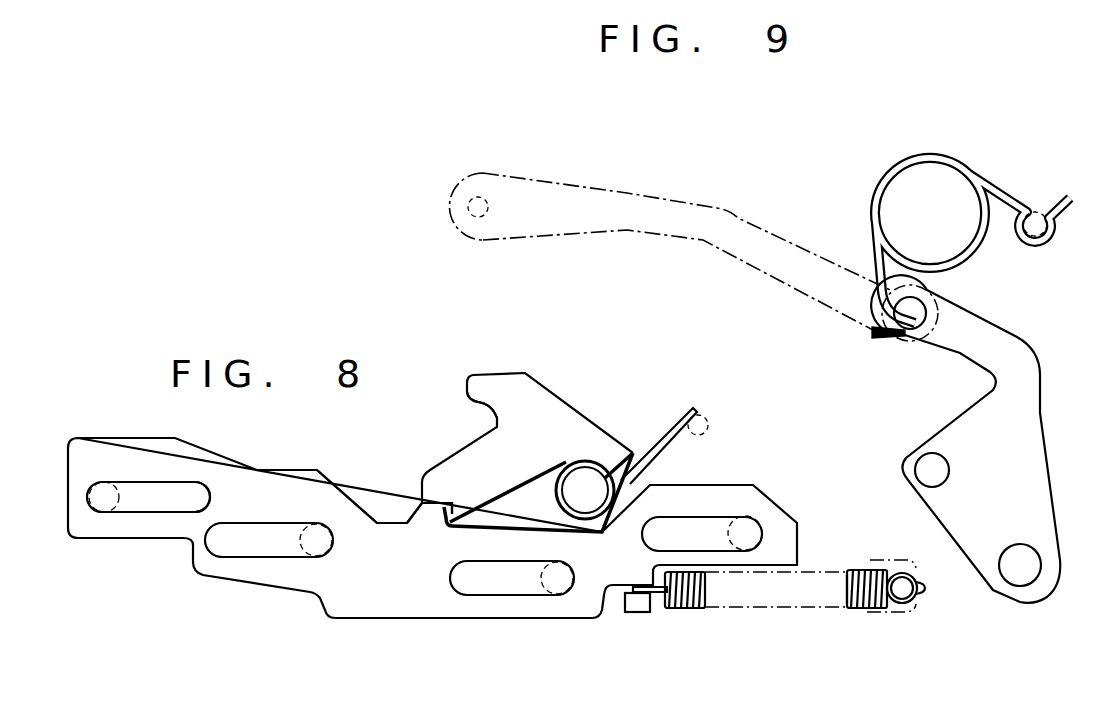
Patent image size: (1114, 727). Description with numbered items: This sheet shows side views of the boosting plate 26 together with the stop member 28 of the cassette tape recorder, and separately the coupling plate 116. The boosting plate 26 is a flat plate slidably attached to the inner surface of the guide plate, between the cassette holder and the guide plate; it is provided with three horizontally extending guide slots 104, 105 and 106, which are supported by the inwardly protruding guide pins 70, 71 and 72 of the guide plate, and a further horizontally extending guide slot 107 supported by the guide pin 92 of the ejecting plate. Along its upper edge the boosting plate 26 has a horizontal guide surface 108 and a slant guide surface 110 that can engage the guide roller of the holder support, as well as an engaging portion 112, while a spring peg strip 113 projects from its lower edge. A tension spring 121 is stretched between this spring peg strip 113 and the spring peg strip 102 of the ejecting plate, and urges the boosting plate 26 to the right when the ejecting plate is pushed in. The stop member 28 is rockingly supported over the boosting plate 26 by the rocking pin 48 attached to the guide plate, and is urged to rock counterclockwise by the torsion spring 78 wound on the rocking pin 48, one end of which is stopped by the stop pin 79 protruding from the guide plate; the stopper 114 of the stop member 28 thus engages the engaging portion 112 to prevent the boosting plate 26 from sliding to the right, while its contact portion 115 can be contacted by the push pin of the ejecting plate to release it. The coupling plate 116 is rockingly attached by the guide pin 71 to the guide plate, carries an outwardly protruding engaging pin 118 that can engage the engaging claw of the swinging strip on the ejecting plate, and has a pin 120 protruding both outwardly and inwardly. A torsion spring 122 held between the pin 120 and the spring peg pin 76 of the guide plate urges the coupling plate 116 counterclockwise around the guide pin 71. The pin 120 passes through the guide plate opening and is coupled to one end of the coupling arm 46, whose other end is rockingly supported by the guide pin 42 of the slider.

In FIG. 8, the boosting plate 26 is at (410, 614).
In FIG. 8, the stop member 28 is at (562, 410).
In FIG. 9, the guide pin 42 is at (488, 207).
In FIG. 9, the coupling arm 46 is at (733, 213).
In FIG. 8, the rocking pin 48 is at (566, 507).
In FIG. 8, the guide pin 70 is at (331, 540).
In FIG. 8, the guide pin 71 is at (570, 566).
In FIG. 9, the guide pin 71 is at (1005, 556).
In FIG. 8, the guide pin 72 is at (752, 541).
In FIG. 9, the spring peg pin 76 is at (1036, 214).
In FIG. 8, the torsion spring 78 is at (650, 465).
In FIG. 8, the stop pin 79 is at (709, 424).
In FIG. 8, the guide pin 92 is at (120, 474).
In FIG. 8, the spring peg strip 102 is at (890, 568).
In FIG. 8, the guide slot 104 is at (300, 529).
In FIG. 8, the guide slot 105 is at (505, 566).
In FIG. 8, the guide slot 106 is at (688, 526).
In FIG. 8, the guide slot 107 is at (203, 494).
In FIG. 8, the horizontal guide surface 108 is at (279, 470).
In FIG. 8, the slant guide surface 110 is at (360, 511).
In FIG. 8, the engaging portion 112 is at (432, 518).
In FIG. 8, the spring peg strip 113 is at (642, 613).
In FIG. 8, the stopper 114 is at (453, 512).
In FIG. 8, the contact portion 115 is at (488, 402).
In FIG. 9, the coupling plate 116 is at (1033, 416).
In FIG. 9, the engaging pin 118 is at (948, 469).
In FIG. 9, the pin 120 is at (927, 295).
In FIG. 8, the tension spring 121 is at (850, 608).
In FIG. 9, the torsion spring 122 is at (930, 153).